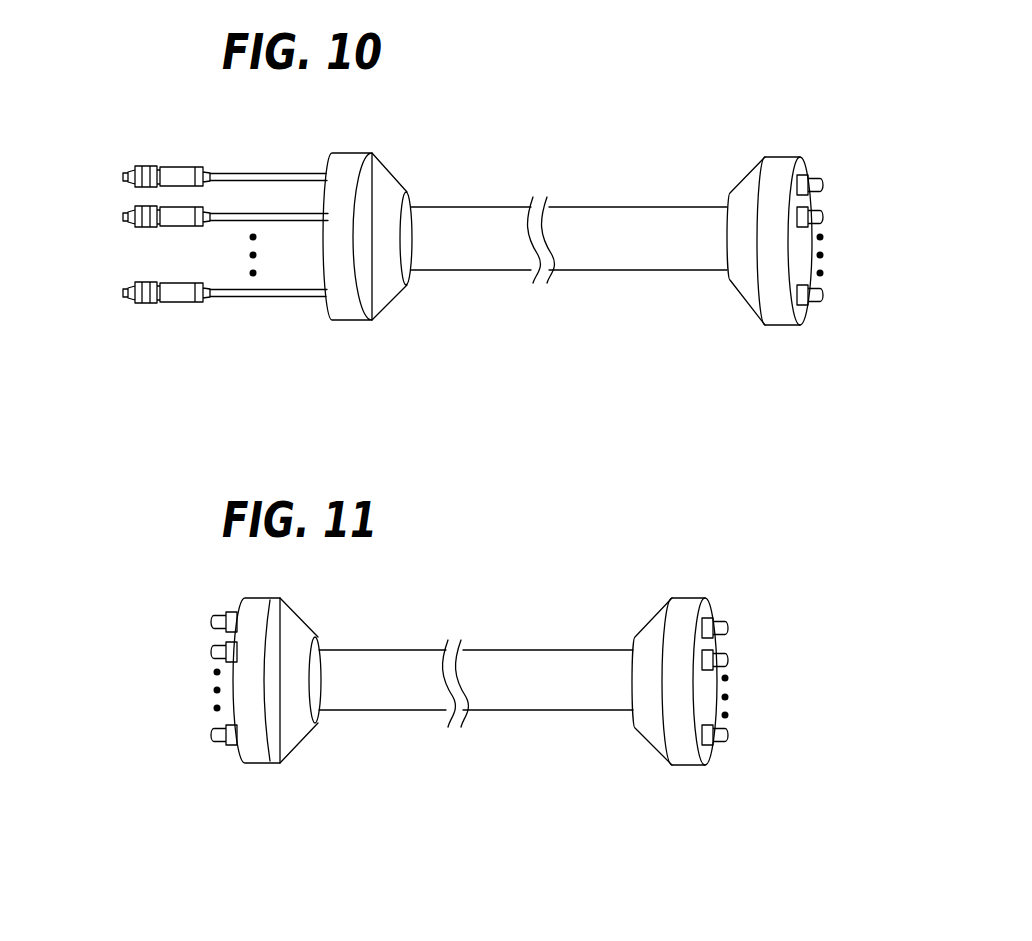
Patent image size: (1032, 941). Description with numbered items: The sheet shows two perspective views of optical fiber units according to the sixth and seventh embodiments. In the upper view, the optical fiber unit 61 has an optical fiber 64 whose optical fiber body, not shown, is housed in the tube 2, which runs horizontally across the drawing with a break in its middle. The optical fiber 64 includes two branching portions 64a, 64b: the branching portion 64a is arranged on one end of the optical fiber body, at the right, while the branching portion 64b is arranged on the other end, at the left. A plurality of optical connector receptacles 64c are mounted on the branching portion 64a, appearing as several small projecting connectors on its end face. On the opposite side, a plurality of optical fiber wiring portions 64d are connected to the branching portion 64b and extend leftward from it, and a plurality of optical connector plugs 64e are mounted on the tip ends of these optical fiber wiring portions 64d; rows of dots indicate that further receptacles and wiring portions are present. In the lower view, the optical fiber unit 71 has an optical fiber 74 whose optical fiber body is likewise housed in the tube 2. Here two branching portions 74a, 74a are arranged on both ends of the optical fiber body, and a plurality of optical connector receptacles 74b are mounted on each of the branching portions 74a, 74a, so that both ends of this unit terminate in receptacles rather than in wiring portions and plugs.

In FIG. 10, the optical fiber unit 61 is at (755, 108).
In FIG. 10, the optical fiber 64 is at (817, 135).
In FIG. 10, the branching portion 64a is at (778, 313).
In FIG. 10, the branching portion 64b is at (350, 310).
In FIG. 10, the optical connector receptacle 64c is at (817, 305).
In FIG. 10, the optical fiber wiring portion 64d is at (280, 292).
In FIG. 10, the optical connector plug 64e is at (173, 295).
In FIG. 10, the tube 2 is at (607, 257).
In FIG. 11, the tube 2 is at (540, 700).
In FIG. 11, the optical fiber unit 71 is at (668, 552).
In FIG. 11, the optical fiber 74 is at (732, 580).
In FIG. 11, the branching portion 74a is at (260, 750).
In FIG. 11, the optical connector receptacle 74b is at (222, 742).